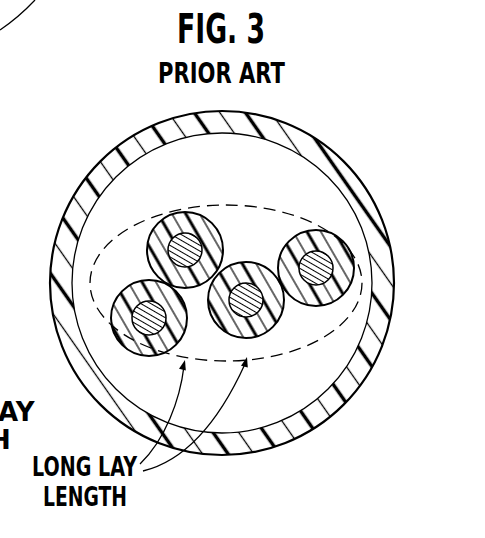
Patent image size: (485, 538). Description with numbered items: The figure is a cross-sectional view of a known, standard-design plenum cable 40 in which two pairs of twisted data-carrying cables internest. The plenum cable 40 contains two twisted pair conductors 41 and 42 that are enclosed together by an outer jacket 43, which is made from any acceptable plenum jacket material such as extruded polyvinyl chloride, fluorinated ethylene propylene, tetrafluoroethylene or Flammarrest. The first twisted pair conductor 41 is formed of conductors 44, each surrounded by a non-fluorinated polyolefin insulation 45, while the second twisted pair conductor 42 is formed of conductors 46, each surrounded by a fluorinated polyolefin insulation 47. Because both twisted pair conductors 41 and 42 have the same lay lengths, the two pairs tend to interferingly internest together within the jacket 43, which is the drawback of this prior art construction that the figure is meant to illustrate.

The plenum cable 40 is at (350, 148).
The twisted pair conductor 41 is at (110, 245).
The twisted pair conductor 42 is at (330, 334).
The jacket 43 is at (355, 187).
The conductors 44 is at (160, 226).
The non-fluorinated polyolefin insulation 45 is at (168, 247).
The conductors 46 is at (306, 305).
The fluorinated polyolefin insulation 47 is at (265, 266).